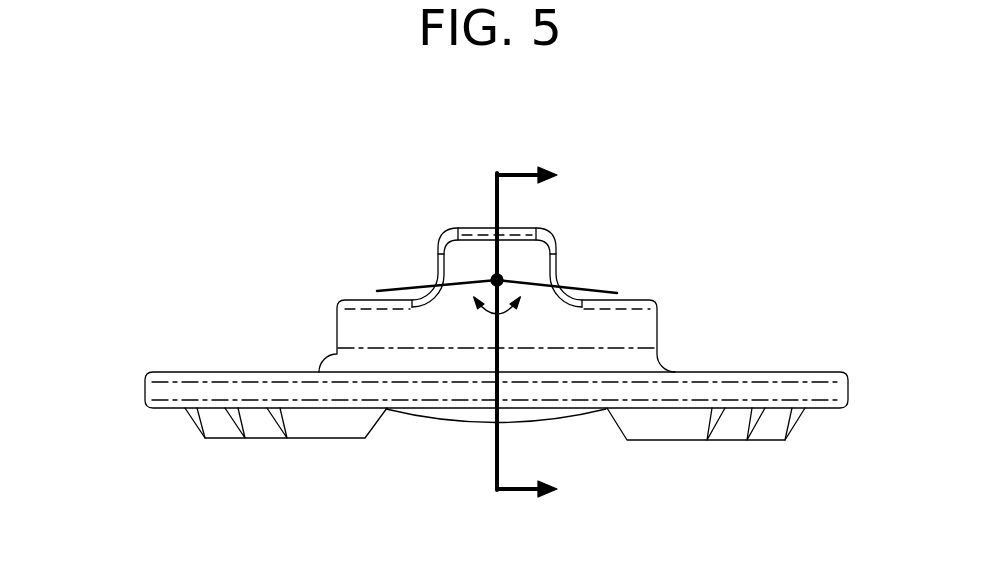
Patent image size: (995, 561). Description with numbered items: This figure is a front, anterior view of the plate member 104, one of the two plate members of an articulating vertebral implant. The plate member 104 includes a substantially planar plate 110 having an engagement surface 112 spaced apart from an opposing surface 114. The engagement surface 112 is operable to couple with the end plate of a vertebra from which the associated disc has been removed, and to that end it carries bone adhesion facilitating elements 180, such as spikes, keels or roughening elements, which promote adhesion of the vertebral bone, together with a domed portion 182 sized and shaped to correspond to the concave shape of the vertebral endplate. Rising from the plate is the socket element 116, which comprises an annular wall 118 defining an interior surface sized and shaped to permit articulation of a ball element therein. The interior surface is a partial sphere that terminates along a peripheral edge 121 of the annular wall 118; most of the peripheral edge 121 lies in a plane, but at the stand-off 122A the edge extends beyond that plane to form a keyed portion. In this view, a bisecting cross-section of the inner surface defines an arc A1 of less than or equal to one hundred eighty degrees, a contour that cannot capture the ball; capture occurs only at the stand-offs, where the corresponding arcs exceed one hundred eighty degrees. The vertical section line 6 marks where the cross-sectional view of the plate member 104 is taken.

The plate member 104 is at (512, 100).
The plate 110 is at (172, 390).
The engagement surface 112 is at (688, 410).
The opposing surface 114 is at (803, 372).
The socket element 116 is at (656, 264).
The annular wall 118 is at (657, 312).
The peripheral edge 121 is at (336, 293).
The stand-off 122A is at (478, 229).
The bone adhesion facilitating elements 180 is at (287, 447).
The domed portion 182 is at (434, 438).
The center point C is at (515, 268).
The arc A1 is at (507, 322).
The line 6- 6 is at (545, 331).